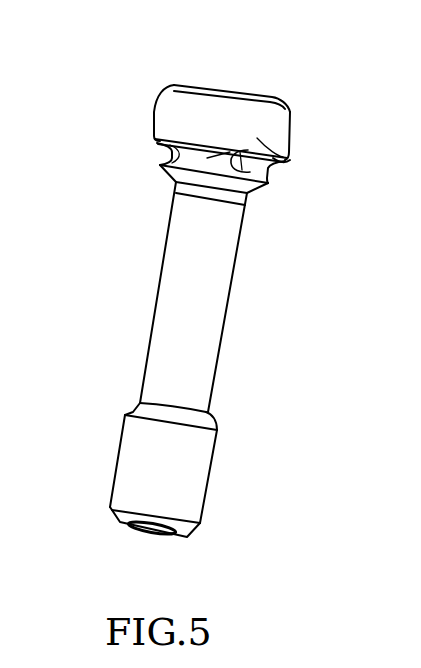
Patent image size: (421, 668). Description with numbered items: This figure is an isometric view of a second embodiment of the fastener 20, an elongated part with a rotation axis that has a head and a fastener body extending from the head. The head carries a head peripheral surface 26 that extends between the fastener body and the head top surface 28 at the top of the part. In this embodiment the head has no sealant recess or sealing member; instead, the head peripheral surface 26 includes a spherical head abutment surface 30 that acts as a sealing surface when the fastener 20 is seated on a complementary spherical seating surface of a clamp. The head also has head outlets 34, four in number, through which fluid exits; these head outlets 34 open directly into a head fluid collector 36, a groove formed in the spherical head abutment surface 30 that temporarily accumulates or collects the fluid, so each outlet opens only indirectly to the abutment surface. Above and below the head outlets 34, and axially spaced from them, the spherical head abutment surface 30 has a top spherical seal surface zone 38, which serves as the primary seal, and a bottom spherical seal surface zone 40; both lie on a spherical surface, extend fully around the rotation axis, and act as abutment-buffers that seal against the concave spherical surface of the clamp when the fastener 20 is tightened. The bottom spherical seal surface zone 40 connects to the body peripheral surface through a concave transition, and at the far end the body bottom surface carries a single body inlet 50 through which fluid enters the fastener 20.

The fastener 20 is at (234, 294).
The head peripheral surface 26 is at (200, 88).
The head top surface 28 is at (200, 80).
The spherical head abutment surface 30 is at (256, 202).
The head outlet 34 is at (277, 168).
The head fluid collector 36 is at (208, 158).
The top spherical seal surface zone 38 is at (285, 156).
The bottom spherical seal surface zone 40 is at (175, 173).
The body inlet 50 is at (150, 527).